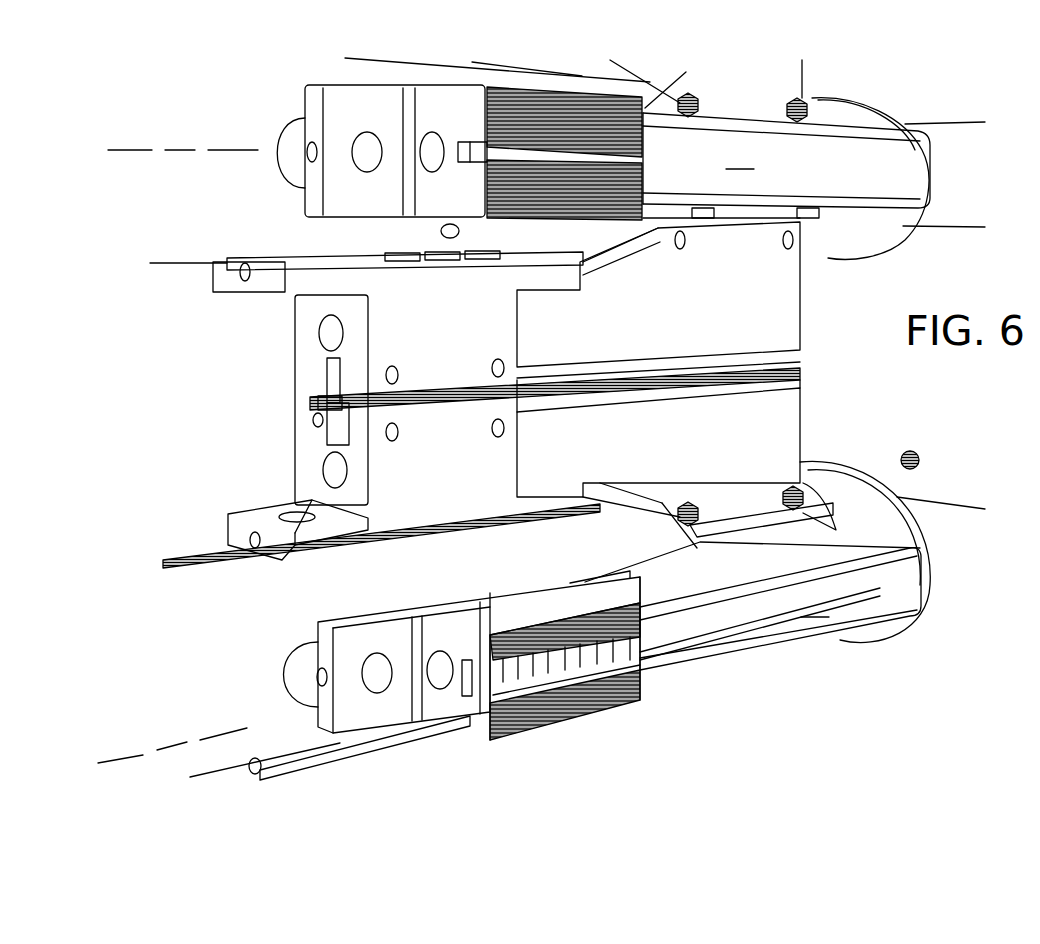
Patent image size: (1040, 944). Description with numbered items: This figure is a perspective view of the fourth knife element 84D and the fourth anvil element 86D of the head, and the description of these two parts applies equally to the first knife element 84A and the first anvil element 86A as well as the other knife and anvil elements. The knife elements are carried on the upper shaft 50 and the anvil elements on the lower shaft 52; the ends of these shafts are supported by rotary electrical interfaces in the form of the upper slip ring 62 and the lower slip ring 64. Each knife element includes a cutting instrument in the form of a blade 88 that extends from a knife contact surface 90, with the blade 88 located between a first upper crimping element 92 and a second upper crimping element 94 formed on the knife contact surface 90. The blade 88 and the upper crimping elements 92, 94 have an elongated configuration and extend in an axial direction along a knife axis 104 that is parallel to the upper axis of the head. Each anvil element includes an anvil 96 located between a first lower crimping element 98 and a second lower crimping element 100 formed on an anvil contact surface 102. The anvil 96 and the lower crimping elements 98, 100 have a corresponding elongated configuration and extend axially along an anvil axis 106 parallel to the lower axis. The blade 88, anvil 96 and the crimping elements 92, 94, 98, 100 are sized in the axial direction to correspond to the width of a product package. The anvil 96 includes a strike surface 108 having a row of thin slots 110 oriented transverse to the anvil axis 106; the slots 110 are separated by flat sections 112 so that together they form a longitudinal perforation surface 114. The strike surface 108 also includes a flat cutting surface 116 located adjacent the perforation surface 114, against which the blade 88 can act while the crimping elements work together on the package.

The upper shaft 50 is at (786, 139).
The lower shaft 52 is at (753, 576).
The upper slip ring 62 is at (895, 108).
The lower slip ring 64 is at (872, 456).
The first knife element 84A is at (500, 325).
The fourth knife element 84D is at (428, 102).
The first anvil element 86A is at (500, 440).
The fourth anvil element 86D is at (455, 710).
The blade 88 is at (470, 145).
The knife contact surface 90 is at (662, 86).
The first upper crimping element 92 is at (585, 108).
The second upper crimping element 94 is at (613, 200).
The anvil 96 is at (330, 430).
The first lower crimping element 98 is at (362, 430).
The second lower crimping element 100 is at (325, 418).
The anvil contact surface 102 is at (655, 703).
The knife axis 104 is at (136, 140).
The anvil axis 106 is at (128, 760).
The strike surface 108 is at (455, 690).
The slots 110 is at (482, 635).
The flat sections 112 is at (510, 625).
The perforation surface 114 is at (640, 645).
The cutting surface 116 is at (640, 665).